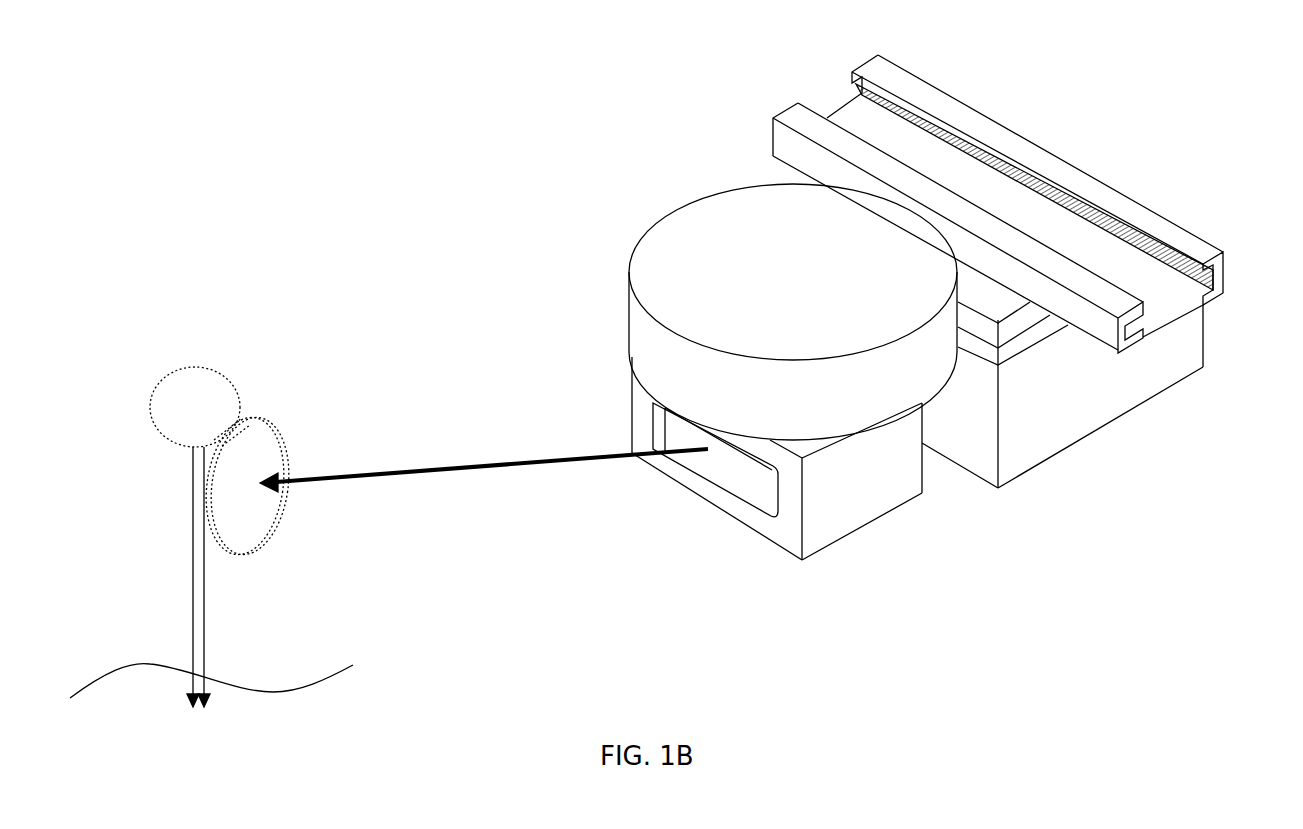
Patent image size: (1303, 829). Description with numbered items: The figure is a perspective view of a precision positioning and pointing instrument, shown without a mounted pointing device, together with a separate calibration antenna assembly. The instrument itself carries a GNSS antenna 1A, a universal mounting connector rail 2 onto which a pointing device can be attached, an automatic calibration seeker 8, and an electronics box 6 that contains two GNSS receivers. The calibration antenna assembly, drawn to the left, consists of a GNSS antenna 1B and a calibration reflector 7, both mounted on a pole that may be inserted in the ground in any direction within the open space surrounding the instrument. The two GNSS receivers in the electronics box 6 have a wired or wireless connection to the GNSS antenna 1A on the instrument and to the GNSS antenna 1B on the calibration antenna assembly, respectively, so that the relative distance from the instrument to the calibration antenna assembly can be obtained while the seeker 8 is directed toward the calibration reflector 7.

The GNSS antenna 1A is at (637, 290).
The GNSS antenna 1B is at (173, 372).
The universal mounting connector rail 2 is at (1122, 244).
The electronics box 6 is at (1047, 385).
The calibration reflector 7 is at (275, 520).
The automatic calibration seeker 8 is at (848, 493).